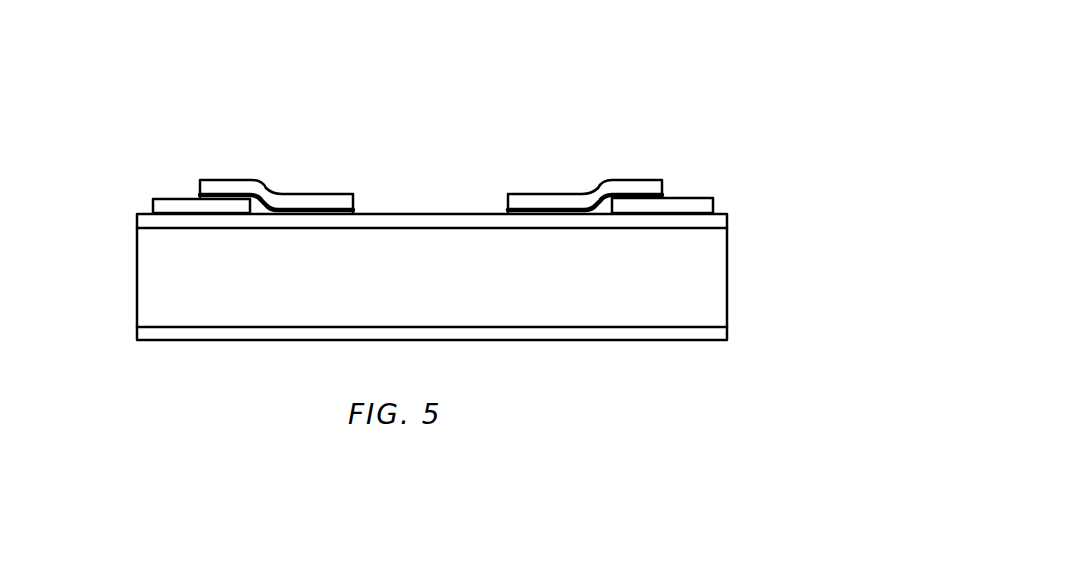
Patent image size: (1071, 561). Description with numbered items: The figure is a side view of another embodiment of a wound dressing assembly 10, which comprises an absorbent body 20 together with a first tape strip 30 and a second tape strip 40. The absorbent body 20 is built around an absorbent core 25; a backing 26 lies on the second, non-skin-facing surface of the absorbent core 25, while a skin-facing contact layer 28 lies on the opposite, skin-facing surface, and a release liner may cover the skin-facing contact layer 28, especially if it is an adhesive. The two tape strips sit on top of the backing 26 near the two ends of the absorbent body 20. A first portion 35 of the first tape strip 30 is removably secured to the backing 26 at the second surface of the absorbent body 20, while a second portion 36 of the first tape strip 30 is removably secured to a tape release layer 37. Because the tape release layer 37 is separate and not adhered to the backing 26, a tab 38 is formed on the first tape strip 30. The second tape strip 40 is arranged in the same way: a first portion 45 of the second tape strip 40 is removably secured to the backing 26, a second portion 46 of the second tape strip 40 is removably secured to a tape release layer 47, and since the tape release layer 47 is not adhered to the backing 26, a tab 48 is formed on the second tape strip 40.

The wound dressing assembly 10 is at (713, 50).
The absorbent body 20 is at (96, 280).
The absorbent core 25 is at (717, 283).
The backing 26 is at (717, 221).
The skin-facing contact layer 28 is at (717, 334).
The first tape strip 30 is at (260, 190).
The first portion of the first tape strip 35 is at (323, 190).
The second portion of the first tape strip 36 is at (222, 160).
The tape release layer 37 is at (162, 200).
The tab 38 is at (245, 138).
The second tape strip 40 is at (605, 190).
The first portion of the second tape strip 45 is at (543, 190).
The second portion of the second tape strip 46 is at (645, 165).
The tape release layer 47 is at (703, 197).
The tab 48 is at (630, 142).